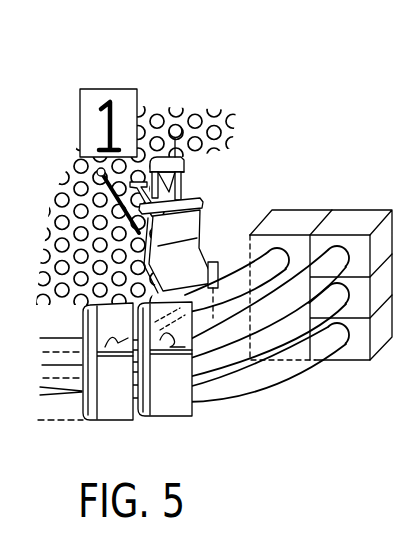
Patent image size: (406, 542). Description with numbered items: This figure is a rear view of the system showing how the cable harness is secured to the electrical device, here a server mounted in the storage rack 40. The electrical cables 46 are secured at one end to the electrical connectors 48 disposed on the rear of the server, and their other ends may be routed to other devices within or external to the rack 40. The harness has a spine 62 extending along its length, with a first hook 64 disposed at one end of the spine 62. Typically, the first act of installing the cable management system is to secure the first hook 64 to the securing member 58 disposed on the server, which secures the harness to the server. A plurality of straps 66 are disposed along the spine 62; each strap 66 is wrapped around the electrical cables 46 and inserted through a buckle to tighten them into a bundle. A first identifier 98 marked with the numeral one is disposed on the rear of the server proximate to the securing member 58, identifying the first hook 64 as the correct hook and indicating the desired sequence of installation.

The storage rack 40 is at (405, 493).
The electrical cables 46 is at (318, 362).
The electrical connectors 48 is at (360, 208).
The securing member 58 is at (179, 127).
The spine 62 is at (196, 266).
The first hook 64 is at (182, 179).
The straps 66 is at (172, 402).
The first identifier 98 is at (107, 98).